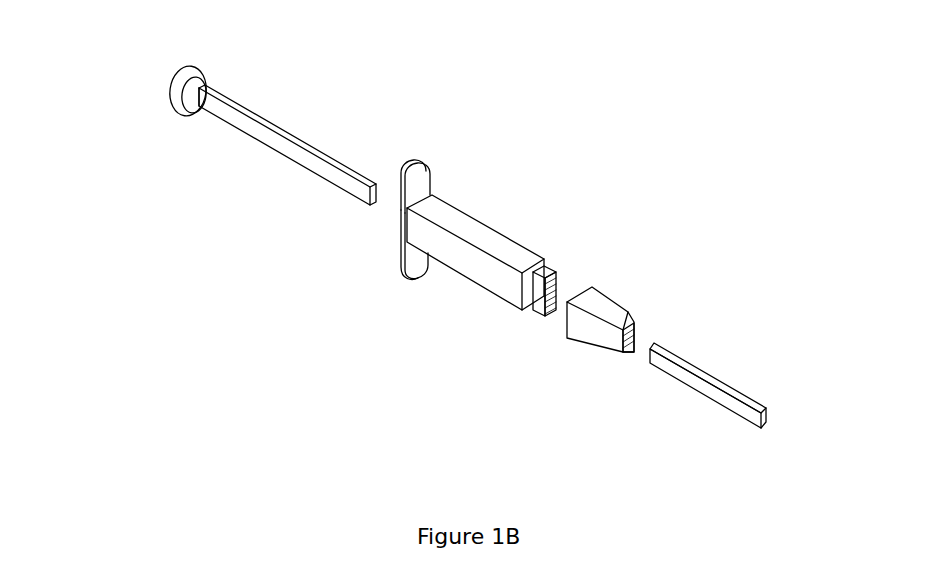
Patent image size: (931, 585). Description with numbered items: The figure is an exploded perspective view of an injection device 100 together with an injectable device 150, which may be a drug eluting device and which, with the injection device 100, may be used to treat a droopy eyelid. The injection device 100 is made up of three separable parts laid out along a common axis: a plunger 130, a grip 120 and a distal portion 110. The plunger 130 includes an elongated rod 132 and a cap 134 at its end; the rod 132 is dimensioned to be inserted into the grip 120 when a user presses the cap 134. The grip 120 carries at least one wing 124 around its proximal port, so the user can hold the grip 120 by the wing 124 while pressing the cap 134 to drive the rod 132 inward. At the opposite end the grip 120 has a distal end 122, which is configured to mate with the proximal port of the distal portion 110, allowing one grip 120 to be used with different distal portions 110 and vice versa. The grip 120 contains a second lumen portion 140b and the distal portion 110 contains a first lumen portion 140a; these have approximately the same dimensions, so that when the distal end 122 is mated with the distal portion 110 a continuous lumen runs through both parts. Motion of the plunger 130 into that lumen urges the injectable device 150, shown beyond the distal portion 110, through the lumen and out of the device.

The injection device 100 is at (522, 134).
The distal portion 110 is at (594, 336).
The grip 120 is at (459, 286).
The distal end 122 is at (532, 300).
The wing 124 is at (419, 182).
The plunger 130 is at (187, 64).
The rod 132 is at (252, 128).
The cap 134 is at (175, 108).
The first lumen portion 140a is at (630, 340).
The second lumen portion 140b is at (554, 292).
The injectable device 150 is at (708, 392).